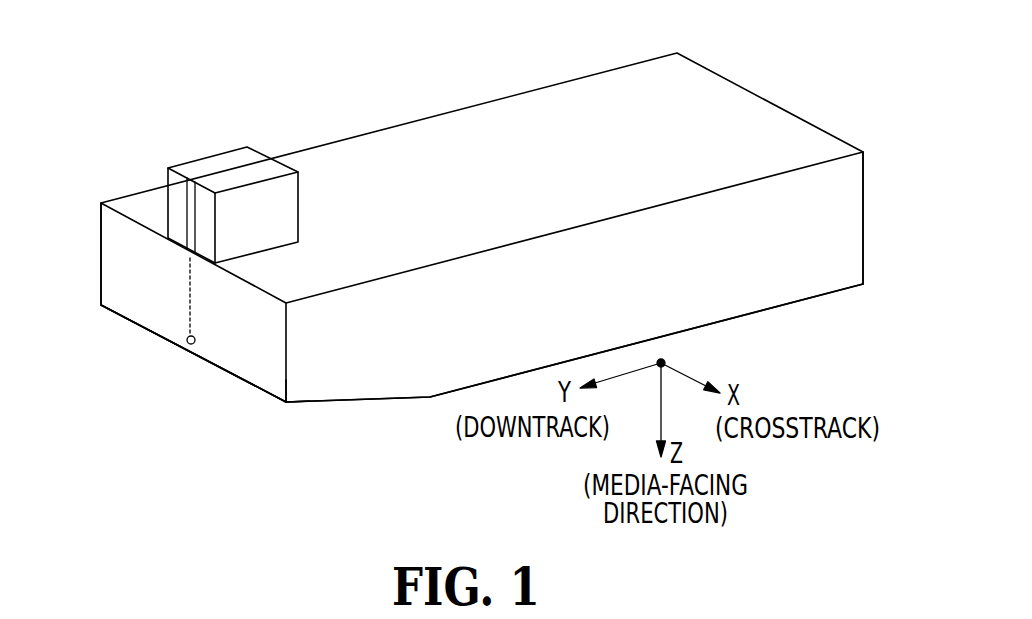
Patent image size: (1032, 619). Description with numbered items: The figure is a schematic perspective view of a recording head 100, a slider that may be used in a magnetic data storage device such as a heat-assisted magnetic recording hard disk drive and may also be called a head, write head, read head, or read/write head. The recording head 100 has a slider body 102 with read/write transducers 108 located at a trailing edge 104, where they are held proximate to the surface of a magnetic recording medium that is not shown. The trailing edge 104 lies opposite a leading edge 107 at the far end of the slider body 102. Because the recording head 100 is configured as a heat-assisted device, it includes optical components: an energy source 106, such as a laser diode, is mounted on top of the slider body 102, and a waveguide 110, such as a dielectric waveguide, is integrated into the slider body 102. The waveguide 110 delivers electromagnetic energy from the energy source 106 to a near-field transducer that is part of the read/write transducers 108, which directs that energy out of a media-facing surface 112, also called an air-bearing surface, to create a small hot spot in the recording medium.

The recording head 100 is at (476, 264).
The slider body 102 is at (395, 135).
The trailing edge 104 is at (100, 282).
The energy source 106 is at (191, 161).
The leading edge 107 is at (863, 228).
The read/write transducers 108 is at (186, 376).
The waveguide 110 is at (190, 304).
The media-facing surface 112 is at (285, 404).